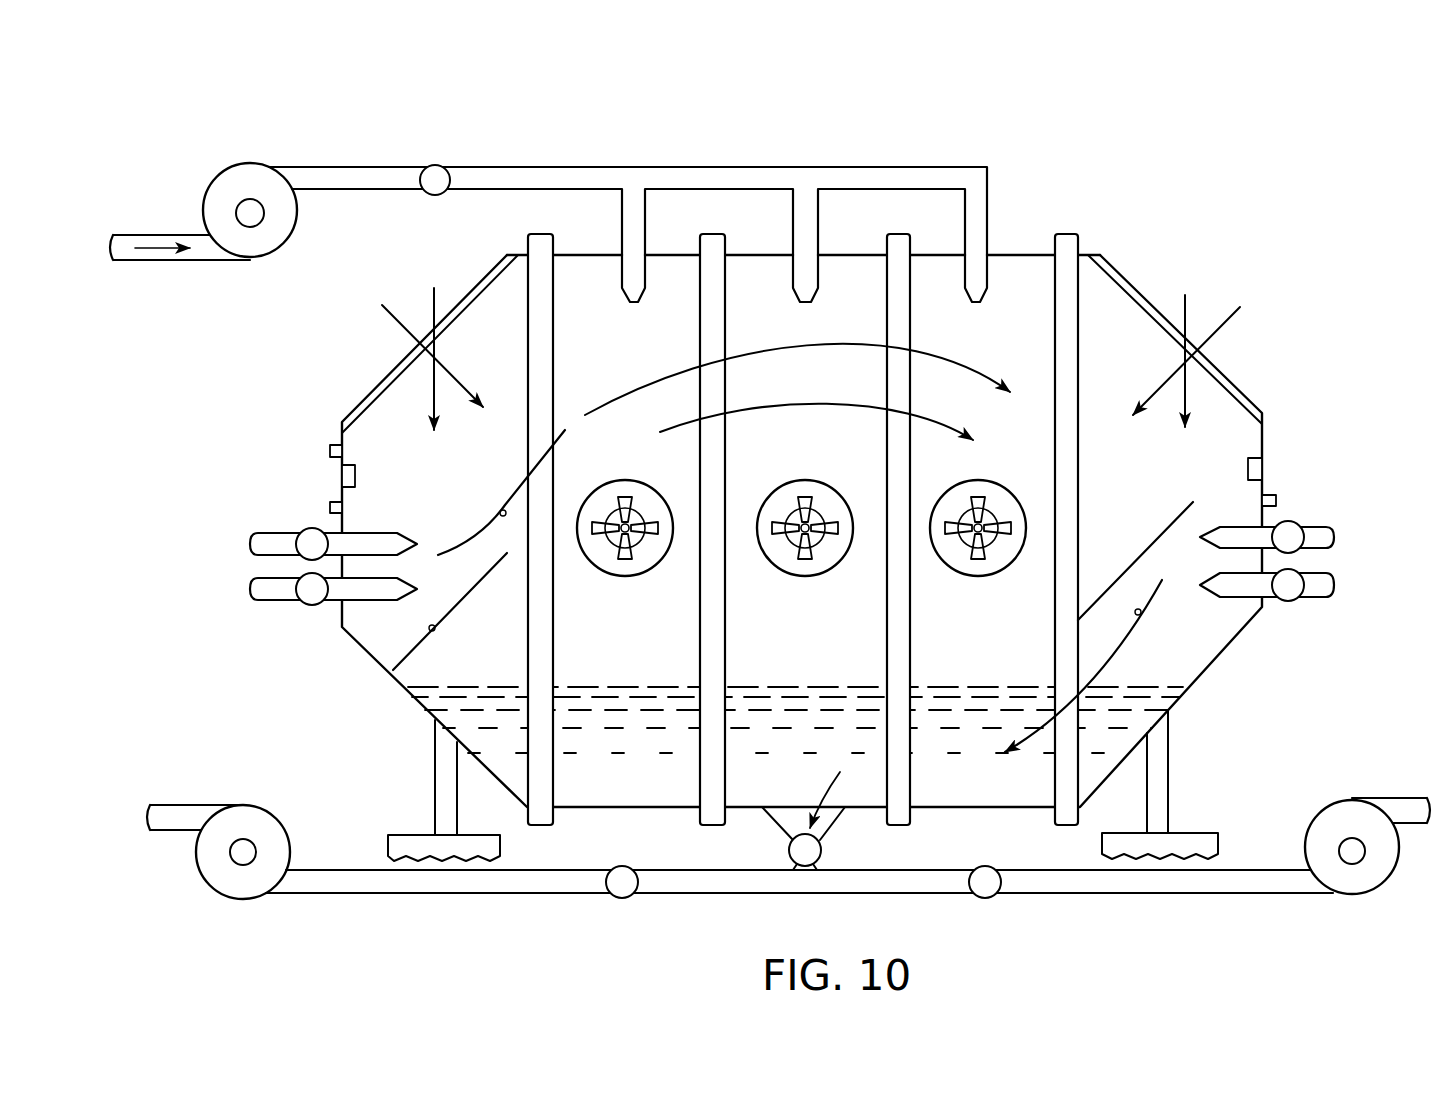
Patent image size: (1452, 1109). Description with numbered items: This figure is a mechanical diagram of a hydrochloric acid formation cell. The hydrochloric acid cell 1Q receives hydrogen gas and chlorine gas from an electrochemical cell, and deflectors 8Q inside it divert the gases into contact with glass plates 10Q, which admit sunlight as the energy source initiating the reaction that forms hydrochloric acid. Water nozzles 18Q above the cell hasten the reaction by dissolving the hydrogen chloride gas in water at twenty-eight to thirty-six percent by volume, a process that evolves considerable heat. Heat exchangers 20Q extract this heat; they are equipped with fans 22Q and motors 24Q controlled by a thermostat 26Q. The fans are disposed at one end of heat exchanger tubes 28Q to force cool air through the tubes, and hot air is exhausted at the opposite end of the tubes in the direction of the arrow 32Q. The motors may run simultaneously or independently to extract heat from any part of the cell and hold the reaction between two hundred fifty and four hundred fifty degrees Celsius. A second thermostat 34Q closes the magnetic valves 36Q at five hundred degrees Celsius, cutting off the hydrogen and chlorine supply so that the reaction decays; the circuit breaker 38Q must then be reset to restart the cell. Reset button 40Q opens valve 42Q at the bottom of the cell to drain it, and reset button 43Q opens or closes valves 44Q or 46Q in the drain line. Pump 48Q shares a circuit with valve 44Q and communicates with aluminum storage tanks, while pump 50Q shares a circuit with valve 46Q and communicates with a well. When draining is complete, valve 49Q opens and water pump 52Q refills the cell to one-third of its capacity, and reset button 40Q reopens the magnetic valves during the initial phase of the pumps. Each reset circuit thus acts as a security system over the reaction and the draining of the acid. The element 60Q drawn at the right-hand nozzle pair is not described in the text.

The hydrochloric acid cell 1Q is at (366, 651).
The deflectors 8Q is at (435, 628).
The glass plates 10Q is at (395, 370).
The water nozzles 18Q is at (632, 304).
The heat exchangers 20Q is at (612, 572).
The fans 22Q is at (606, 472).
The motors 24Q is at (630, 522).
The thermostat 26Q is at (357, 478).
The heat exchanger tubes 28Q is at (270, 580).
The arrow 32Q is at (500, 511).
The thermostat 34Q is at (1247, 469).
The magnetic valves 36Q is at (306, 528).
The circuit breaker 38Q is at (1278, 495).
The reset button 40Q is at (333, 504).
The valve 42Q is at (822, 856).
The reset button 43Q is at (333, 447).
The valve 44Q is at (612, 866).
The valve 46Q is at (990, 866).
The pump 48Q is at (227, 804).
The valve 49Q is at (433, 164).
The pump 50Q is at (1316, 803).
The water pump 52Q is at (214, 170).
The nozzle assembly 60Q is at (1212, 550).